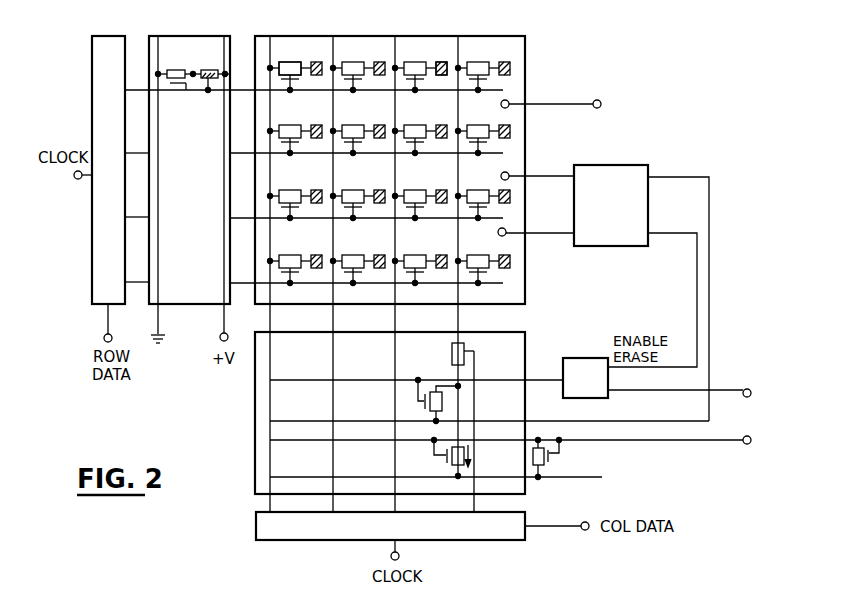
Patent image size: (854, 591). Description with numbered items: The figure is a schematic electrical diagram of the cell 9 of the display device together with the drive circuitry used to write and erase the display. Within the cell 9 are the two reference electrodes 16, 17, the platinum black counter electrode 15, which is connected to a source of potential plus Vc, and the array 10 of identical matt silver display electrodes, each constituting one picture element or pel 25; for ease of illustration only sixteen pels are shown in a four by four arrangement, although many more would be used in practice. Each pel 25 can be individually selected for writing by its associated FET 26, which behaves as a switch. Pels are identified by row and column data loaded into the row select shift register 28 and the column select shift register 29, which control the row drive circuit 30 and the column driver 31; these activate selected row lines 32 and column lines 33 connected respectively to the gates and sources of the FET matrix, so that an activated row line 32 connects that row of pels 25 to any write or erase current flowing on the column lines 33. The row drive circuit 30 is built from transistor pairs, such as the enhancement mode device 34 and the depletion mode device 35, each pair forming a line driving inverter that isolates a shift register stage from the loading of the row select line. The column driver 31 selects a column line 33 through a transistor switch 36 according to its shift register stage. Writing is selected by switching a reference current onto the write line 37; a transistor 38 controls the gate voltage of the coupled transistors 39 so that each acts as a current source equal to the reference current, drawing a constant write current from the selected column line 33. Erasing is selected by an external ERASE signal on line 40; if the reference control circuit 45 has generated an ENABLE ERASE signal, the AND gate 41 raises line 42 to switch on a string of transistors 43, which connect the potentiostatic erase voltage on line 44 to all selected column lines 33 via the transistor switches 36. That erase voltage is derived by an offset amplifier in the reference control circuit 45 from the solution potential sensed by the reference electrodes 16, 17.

The cell 9 is at (528, 40).
The array 10 is at (360, 50).
The platinum black counter electrode 15 is at (501, 105).
The reference electrode 16 is at (501, 175).
The reference electrode 17 is at (498, 234).
The pel 25 is at (322, 62).
The FET 26 is at (417, 62).
The row select shift register 28 is at (100, 36).
The column select shift register 29 is at (256, 527).
The row drive circuit 30 is at (148, 38).
The column driver 31 is at (255, 418).
The row line 32 is at (238, 88).
The column line 33 is at (458, 316).
The enhancement mode device 34 is at (182, 52).
The depletion mode device 35 is at (215, 52).
The transistor switch 36 is at (451, 353).
The write line 37 is at (677, 443).
The transistor 38 is at (549, 460).
The coupled transistor 39 is at (446, 460).
The line 40 is at (720, 388).
The AND gate 41 is at (586, 356).
The line 42 is at (547, 378).
The transistor 43 is at (424, 405).
The line 44 is at (552, 408).
The reference control circuit 45 is at (652, 150).